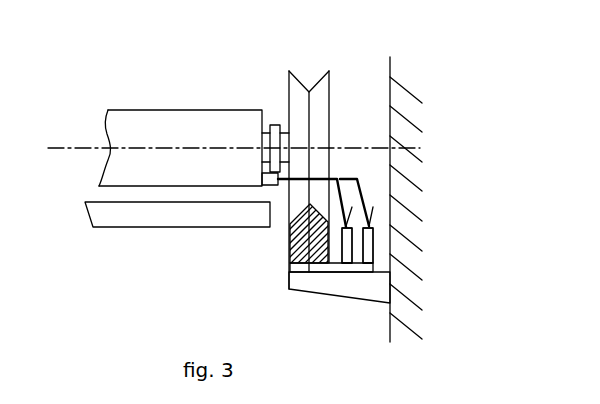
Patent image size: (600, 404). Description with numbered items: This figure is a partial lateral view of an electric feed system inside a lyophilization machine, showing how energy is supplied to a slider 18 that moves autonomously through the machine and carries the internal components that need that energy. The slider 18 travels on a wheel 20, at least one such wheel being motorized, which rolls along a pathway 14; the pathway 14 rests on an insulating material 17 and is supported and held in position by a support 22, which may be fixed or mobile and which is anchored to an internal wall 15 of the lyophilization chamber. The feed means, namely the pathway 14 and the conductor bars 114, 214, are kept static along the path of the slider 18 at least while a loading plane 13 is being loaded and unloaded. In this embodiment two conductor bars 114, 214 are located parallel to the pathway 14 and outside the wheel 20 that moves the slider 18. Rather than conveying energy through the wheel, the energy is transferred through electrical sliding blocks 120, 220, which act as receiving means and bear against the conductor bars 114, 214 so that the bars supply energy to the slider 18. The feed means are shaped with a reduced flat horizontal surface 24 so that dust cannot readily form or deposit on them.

The slider 18 is at (135, 125).
The loading plane 13 is at (147, 212).
The wheel 20 is at (320, 95).
The internal wall 15 is at (389, 83).
The electrical sliding block 120 is at (318, 179).
The electrical sliding block 220 is at (350, 179).
The reduced flat horizontal surface 24 is at (343, 229).
The conductor bar 114 is at (367, 237).
The conductor bar 214 is at (347, 250).
The pathway 14 is at (309, 241).
The insulating material 17 is at (300, 269).
The support 22 is at (333, 278).